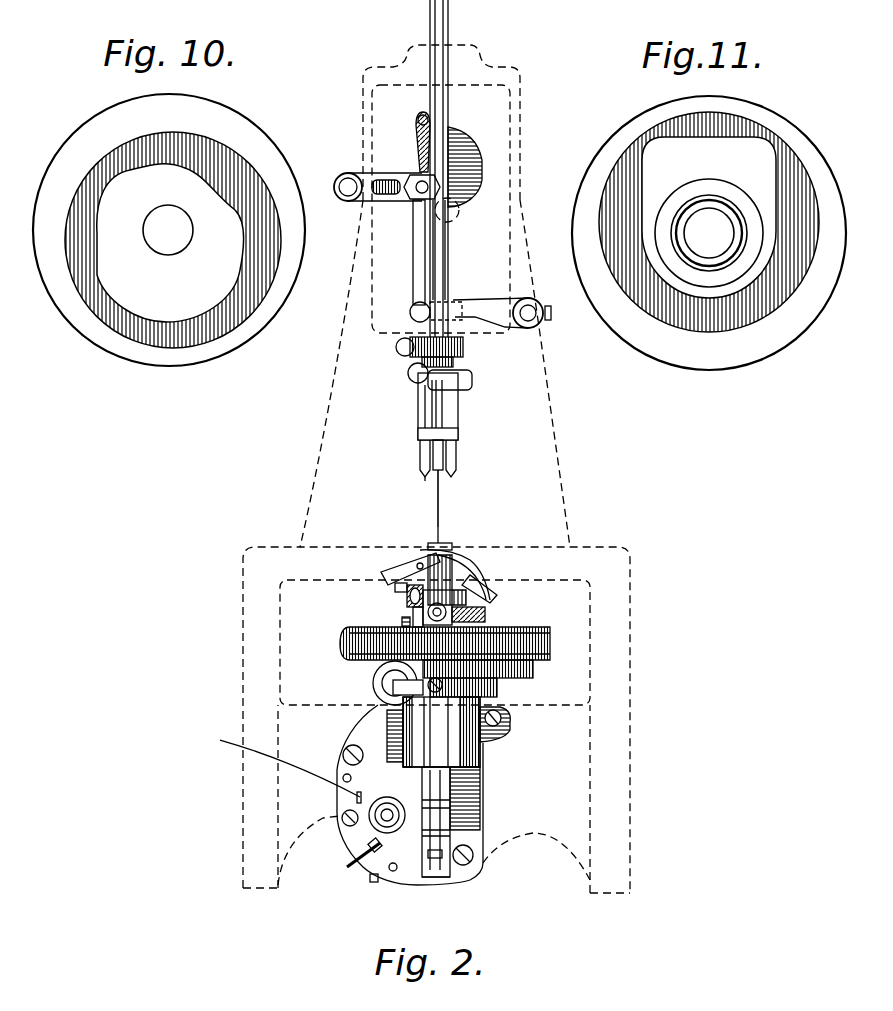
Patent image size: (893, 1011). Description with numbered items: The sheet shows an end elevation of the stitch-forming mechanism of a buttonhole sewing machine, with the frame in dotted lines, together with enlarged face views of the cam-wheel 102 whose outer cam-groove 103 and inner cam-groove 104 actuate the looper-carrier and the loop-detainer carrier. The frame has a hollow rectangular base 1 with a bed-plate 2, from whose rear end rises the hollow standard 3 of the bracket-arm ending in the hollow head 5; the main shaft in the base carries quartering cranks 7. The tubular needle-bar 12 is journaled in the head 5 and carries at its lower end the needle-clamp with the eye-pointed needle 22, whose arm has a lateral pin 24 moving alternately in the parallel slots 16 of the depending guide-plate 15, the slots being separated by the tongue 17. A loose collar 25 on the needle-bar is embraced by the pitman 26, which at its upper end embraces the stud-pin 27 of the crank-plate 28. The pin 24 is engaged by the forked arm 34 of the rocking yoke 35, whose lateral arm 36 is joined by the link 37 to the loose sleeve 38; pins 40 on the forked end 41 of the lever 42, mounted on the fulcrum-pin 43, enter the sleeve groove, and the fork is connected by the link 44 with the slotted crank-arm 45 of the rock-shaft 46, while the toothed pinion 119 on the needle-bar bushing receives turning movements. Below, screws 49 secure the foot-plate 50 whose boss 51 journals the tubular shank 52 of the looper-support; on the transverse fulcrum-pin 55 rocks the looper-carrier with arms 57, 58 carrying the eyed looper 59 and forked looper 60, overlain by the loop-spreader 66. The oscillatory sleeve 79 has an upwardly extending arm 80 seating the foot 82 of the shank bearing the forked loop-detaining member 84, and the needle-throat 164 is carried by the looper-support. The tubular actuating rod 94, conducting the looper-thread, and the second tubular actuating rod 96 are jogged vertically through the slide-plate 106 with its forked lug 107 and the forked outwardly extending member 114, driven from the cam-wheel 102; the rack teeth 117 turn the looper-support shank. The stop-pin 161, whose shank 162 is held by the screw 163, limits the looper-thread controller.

In FIG. 2, the hollow rectangular base 1 is at (632, 840).
In FIG. 2, the bed-plate 2 is at (345, 547).
In FIG. 2, the hollow standard 3 is at (550, 395).
In FIG. 2, the hollow head 5 is at (522, 182).
In FIG. 2, the quartering cranks 7 is at (472, 565).
In FIG. 2, the tubular needle-bar 12 is at (444, 102).
In FIG. 2, the depending guide-plate 15 is at (461, 456).
In FIG. 2, the parallel slots or runways 16 is at (428, 479).
In FIG. 2, the tongue 17 is at (424, 455).
In FIG. 2, the eye-pointed needle 22 is at (441, 500).
In FIG. 2, the lateral pin 24 is at (450, 398).
In FIG. 2, the loose collar 25 is at (455, 216).
In FIG. 2, the pitman 26 is at (417, 140).
In FIG. 2, the stud-pin 27 is at (423, 115).
In FIG. 2, the crank-plate 28 is at (480, 156).
In FIG. 2, the forked arm 34 is at (425, 405).
In FIG. 2, the rocking yoke 35 is at (474, 385).
In FIG. 2, the lateral arm 36 is at (414, 379).
In FIG. 2, the link 37 is at (420, 360).
In FIG. 2, the loose sleeve 38 is at (414, 320).
In FIG. 2, the pins 40 is at (448, 305).
In FIG. 2, the forked end 41 is at (440, 298).
In FIG. 2, the lever 42 is at (490, 313).
In FIG. 2, the fulcrum-pin 43 is at (540, 310).
In FIG. 2, the link 44 is at (413, 279).
In FIG. 2, the slotted crank-arm 45 is at (388, 181).
In FIG. 2, the rock-shaft 46 is at (348, 180).
In FIG. 2, the screws 49 is at (346, 753).
In FIG. 2, the foot-plate 50 is at (423, 795).
In FIG. 2, the boss 51 is at (433, 732).
In FIG. 2, the tubular shank 52 is at (422, 770).
In FIG. 2, the transverse fulcrum-pin 55 is at (437, 607).
In FIG. 2, the carrier arm 57 is at (469, 613).
In FIG. 2, the carrier arm 58 is at (395, 588).
In FIG. 2, the eyed looper 59 is at (485, 580).
In FIG. 2, the forked looper 60 is at (411, 556).
In FIG. 2, the loop-spreader 66 is at (412, 566).
In FIG. 2, the oscillatory sleeve 79 is at (498, 627).
In FIG. 2, the upwardly extending arm 80 is at (413, 612).
In FIG. 2, the foot 82 is at (407, 596).
In FIG. 2, the forked loop-detaining member 84 is at (432, 547).
In FIG. 2, the tubular actuating rod 94 is at (430, 840).
In FIG. 2, the second tubular actuating rod 96 is at (398, 806).
In FIG. 10, the cam-wheel 102 is at (168, 249).
In FIG. 11, the cam-wheel 102 is at (709, 221).
In FIG. 10, the cam-groove 103 is at (148, 348).
In FIG. 11, the cam-groove 104 is at (763, 135).
In FIG. 2, the slide-plate 106 is at (450, 828).
In FIG. 2, the forked lug 107 is at (458, 808).
In FIG. 2, the outwardly extending member 114 is at (445, 878).
In FIG. 2, the rack teeth 117 is at (393, 685).
In FIG. 2, the toothed pinion 119 is at (465, 346).
In FIG. 2, the stop-pin 161 is at (362, 860).
In FIG. 2, the shank 162 is at (369, 847).
In FIG. 2, the screw 163 is at (355, 823).
In FIG. 2, the needle-throat 164 is at (449, 547).